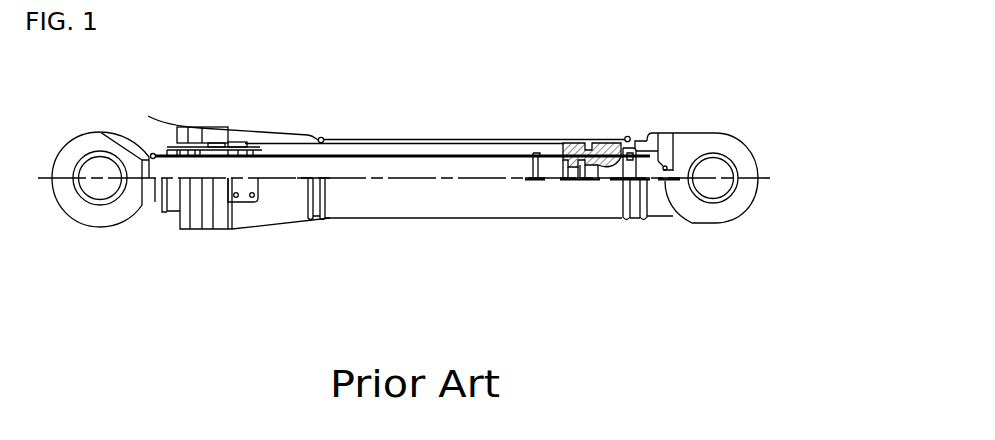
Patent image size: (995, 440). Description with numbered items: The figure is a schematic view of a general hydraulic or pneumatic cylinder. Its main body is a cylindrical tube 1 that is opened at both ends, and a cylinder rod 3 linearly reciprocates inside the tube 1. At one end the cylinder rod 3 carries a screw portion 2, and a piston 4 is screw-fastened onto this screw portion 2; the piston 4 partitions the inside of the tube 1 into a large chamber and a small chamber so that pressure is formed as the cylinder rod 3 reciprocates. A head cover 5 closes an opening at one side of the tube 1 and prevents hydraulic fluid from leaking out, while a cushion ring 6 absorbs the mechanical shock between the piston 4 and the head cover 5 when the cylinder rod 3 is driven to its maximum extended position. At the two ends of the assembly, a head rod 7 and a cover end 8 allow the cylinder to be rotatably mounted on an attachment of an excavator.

The tube 1 is at (430, 143).
The screw portion 2 is at (625, 136).
The cylinder rod 3 is at (483, 165).
The piston 4 is at (613, 143).
The head cover 5 is at (202, 150).
The cushion ring 6 is at (546, 155).
The head rod 7 is at (93, 133).
The cover end 8 is at (718, 144).